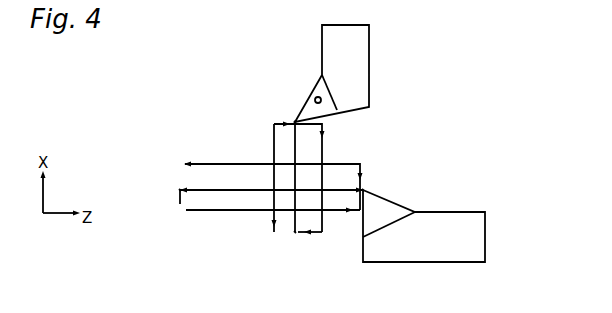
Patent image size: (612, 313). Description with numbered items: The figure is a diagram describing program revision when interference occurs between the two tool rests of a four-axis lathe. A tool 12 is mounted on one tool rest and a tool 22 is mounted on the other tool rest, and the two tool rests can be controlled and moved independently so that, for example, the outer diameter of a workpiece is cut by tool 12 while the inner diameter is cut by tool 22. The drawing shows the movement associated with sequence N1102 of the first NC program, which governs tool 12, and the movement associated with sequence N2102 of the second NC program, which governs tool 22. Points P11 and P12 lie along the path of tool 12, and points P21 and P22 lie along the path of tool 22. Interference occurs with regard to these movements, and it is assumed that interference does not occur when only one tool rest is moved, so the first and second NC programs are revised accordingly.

The tool 12 is at (368, 70).
The tool 22 is at (485, 238).
The tool tip position of first tool P11 is at (295, 122).
The end position of first tool path P12 is at (295, 232).
The tool tip position of second tool P21 is at (363, 190).
The end position of second tool path P22 is at (152, 186).
The sequence of the first NC program N1102 is at (296, 178).
The sequence of the second NC program N2102 is at (233, 190).